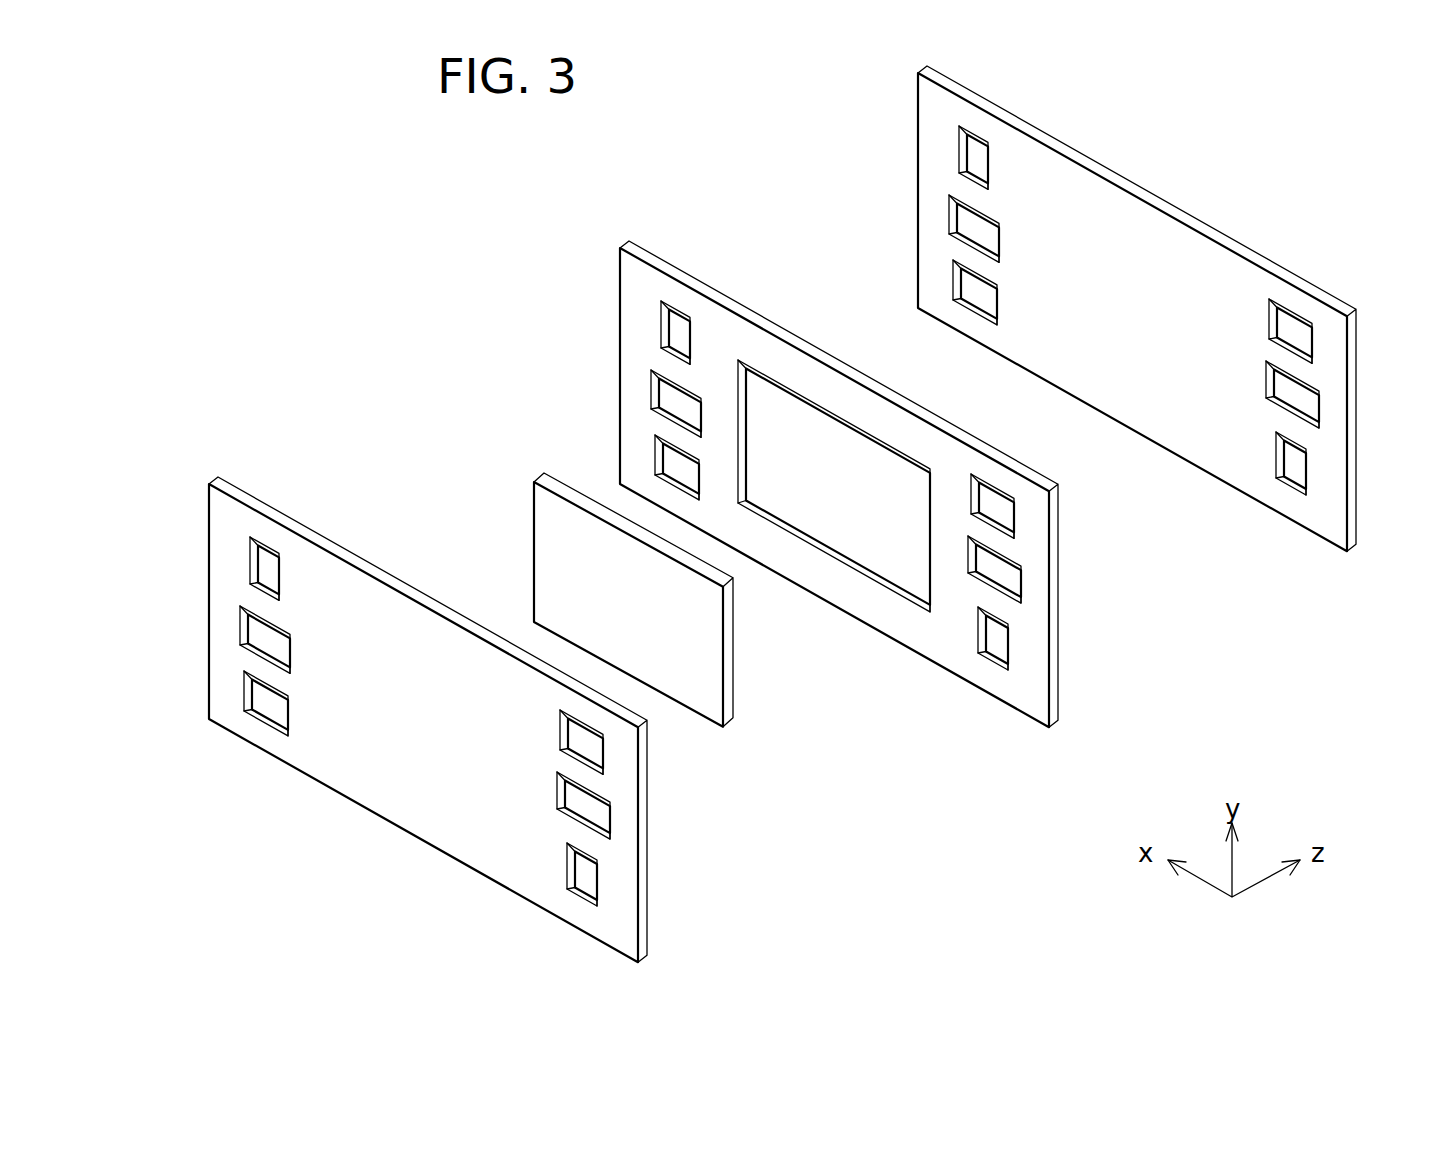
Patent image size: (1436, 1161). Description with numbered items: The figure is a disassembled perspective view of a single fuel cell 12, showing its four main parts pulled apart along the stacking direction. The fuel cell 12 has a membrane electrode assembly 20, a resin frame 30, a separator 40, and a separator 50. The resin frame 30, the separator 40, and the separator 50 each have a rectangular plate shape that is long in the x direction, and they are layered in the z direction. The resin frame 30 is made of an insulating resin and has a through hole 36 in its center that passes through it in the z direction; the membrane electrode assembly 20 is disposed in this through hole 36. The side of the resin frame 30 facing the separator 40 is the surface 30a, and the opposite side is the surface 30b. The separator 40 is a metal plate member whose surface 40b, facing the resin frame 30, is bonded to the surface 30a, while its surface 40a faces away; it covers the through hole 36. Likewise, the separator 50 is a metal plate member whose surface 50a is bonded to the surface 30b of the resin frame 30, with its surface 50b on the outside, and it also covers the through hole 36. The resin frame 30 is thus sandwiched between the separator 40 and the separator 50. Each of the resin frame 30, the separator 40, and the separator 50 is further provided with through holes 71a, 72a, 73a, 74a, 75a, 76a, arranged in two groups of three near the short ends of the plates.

The fuel cell 12 is at (175, 286).
The membrane electrode assembly 20 is at (748, 710).
The resin frame 30 is at (847, 638).
The surface 30a is at (798, 333).
The surface 30b is at (825, 580).
The through hole 36 is at (900, 500).
The separator 40 is at (1255, 223).
The surface 40a is at (1148, 190).
The surface 40b is at (1107, 218).
The separator 50 is at (398, 842).
The surface 50a is at (436, 595).
The surface 50b is at (400, 630).
The through hole 71a is at (248, 558).
The through hole 72a is at (242, 632).
The through hole 73a is at (245, 698).
The through hole 74a is at (605, 750).
The through hole 75a is at (610, 818).
The through hole 76a is at (598, 888).